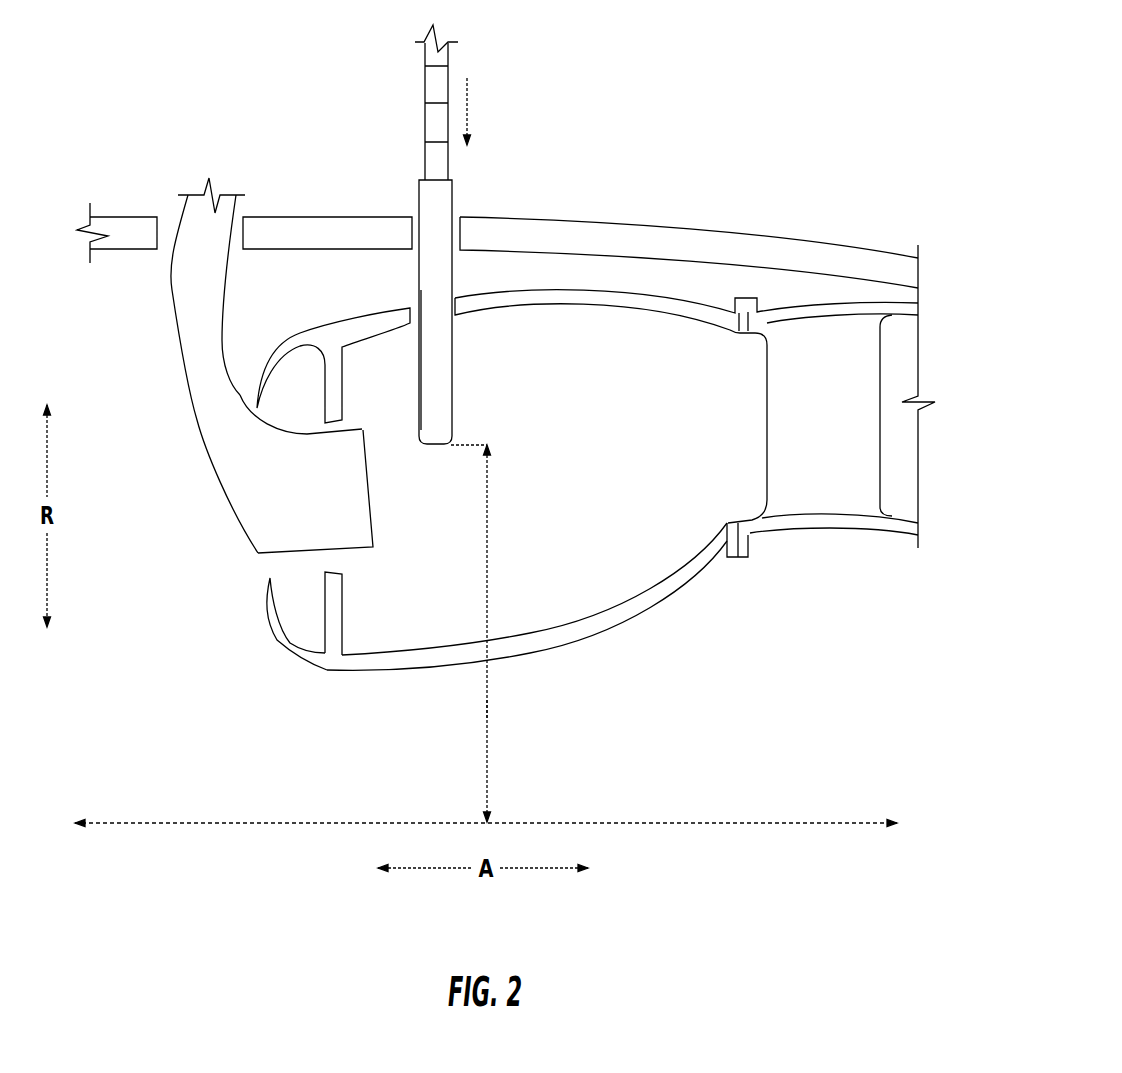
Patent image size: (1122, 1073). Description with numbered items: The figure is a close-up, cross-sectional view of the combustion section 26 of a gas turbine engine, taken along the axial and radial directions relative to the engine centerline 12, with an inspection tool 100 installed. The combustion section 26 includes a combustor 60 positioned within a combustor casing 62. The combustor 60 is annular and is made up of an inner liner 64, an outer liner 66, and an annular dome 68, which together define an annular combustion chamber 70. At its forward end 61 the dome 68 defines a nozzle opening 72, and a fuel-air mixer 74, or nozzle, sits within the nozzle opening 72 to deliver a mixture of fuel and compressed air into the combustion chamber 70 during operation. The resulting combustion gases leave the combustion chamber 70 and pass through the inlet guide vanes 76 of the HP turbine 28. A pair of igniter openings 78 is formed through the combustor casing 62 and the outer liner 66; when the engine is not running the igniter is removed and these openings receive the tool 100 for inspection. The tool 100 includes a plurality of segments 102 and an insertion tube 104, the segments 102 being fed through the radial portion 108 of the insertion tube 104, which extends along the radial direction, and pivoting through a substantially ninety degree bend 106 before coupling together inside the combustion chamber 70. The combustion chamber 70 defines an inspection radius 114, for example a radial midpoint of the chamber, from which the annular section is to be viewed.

The longitudinal centerline axis 12 is at (713, 822).
The combustion section 26 is at (752, 89).
The HP turbine 28 is at (848, 288).
The combustor 60 is at (662, 268).
The forward end 61 is at (325, 695).
The combustor casing 62 is at (617, 220).
The inner liner 64 is at (612, 619).
The outer liner 66 is at (560, 297).
The dome 68 is at (298, 610).
The combustion chamber 70 is at (580, 462).
The nozzle opening 72 is at (375, 557).
The fuel-air mixer 74 is at (233, 477).
The inlet guide vanes 76 is at (858, 375).
The igniter openings 78 is at (415, 212).
The tool 100 is at (474, 184).
The segments 102 is at (432, 88).
The insertion tube 104 is at (505, 378).
The bend 106 is at (433, 458).
The radial portion 108 is at (442, 292).
The inspection radius 114 is at (487, 573).